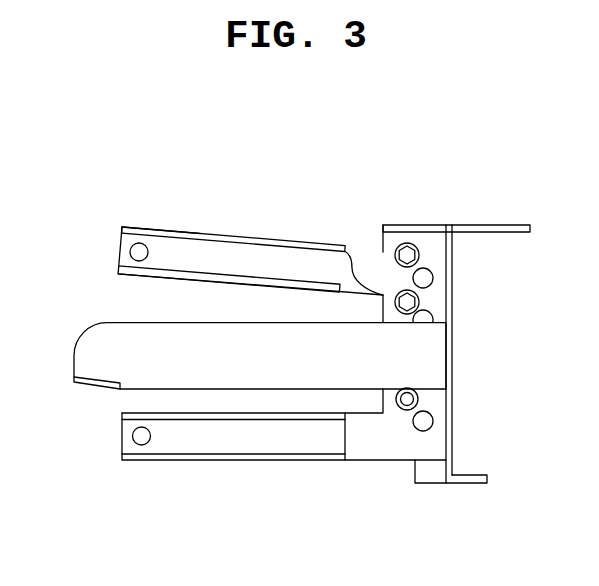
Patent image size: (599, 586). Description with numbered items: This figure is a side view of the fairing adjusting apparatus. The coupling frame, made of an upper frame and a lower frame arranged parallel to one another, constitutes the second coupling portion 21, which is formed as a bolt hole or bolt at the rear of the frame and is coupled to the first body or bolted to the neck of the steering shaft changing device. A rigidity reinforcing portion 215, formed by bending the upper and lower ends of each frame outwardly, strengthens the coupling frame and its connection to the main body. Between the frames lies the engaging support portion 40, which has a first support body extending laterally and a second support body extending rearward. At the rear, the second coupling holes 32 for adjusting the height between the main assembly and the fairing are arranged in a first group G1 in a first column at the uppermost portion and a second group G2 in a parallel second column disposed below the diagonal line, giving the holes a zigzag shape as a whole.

The second coupling portion 21 is at (138, 252).
The rigidity reinforcing portion 215 is at (136, 231).
The first group G1 is at (388, 254).
The second group G2 is at (428, 313).
The engaging support portion 40 is at (432, 362).
The second coupling hole 32 is at (433, 419).